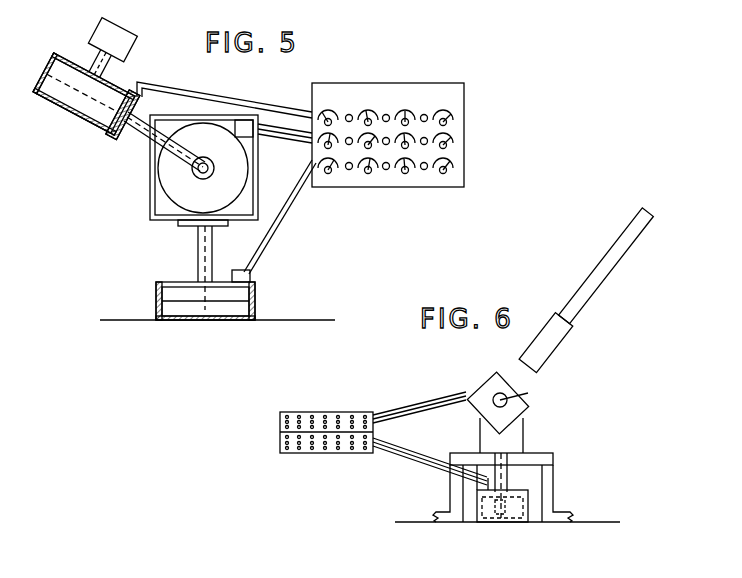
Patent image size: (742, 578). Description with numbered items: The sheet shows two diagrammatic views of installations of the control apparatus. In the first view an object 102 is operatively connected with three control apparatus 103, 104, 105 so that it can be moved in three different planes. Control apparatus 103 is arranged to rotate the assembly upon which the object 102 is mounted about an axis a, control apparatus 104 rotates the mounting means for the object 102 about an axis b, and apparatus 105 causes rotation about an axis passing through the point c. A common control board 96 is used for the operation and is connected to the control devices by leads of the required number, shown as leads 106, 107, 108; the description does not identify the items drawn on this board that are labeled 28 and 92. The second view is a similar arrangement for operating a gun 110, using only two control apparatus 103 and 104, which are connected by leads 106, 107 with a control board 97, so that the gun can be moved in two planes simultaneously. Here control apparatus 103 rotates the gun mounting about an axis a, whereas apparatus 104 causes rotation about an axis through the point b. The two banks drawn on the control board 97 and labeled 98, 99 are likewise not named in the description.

In FIG. 5, the control apparatus 104 is at (74, 112).
In FIG. 6, the control apparatus 104 is at (483, 386).
In FIG. 5, the control apparatus 105 is at (258, 160).
In FIG. 5, the object 102 is at (162, 186).
In FIG. 5, the control apparatus 103 is at (175, 290).
In FIG. 6, the control apparatus 103 is at (487, 523).
In FIG. 5, the lead 106 is at (276, 240).
In FIG. 6, the lead 106 is at (398, 455).
In FIG. 5, the lead 107 is at (183, 88).
In FIG. 6, the lead 107 is at (397, 411).
In FIG. 5, the lead 108 is at (270, 126).
In FIG. 5, the common control board 96 is at (400, 84).
In FIG. 5, the gauge 28 is at (455, 116).
In FIG. 5, the indicator 92 is at (423, 170).
In FIG. 6, the gun 110 is at (597, 293).
In FIG. 6, the control board 97 is at (320, 412).
In FIG. 6, the upper control bank 98 is at (279, 420).
In FIG. 6, the lower control bank 99 is at (279, 441).
In FIG. 5, the axis a is at (205, 250).
In FIG. 6, the axis a is at (503, 452).
In FIG. 5, the axis b is at (142, 140).
In FIG. 6, the axis b is at (528, 393).
In FIG. 5, the point c is at (204, 179).